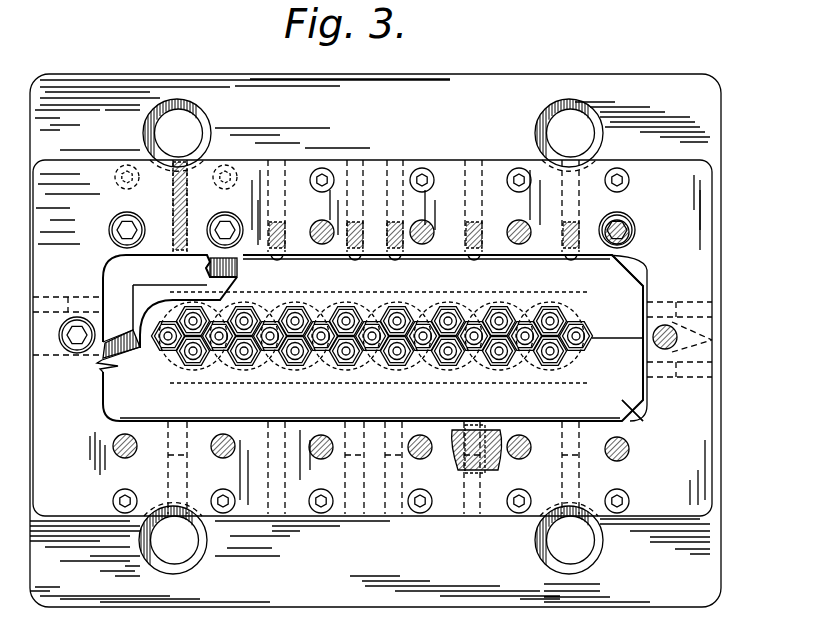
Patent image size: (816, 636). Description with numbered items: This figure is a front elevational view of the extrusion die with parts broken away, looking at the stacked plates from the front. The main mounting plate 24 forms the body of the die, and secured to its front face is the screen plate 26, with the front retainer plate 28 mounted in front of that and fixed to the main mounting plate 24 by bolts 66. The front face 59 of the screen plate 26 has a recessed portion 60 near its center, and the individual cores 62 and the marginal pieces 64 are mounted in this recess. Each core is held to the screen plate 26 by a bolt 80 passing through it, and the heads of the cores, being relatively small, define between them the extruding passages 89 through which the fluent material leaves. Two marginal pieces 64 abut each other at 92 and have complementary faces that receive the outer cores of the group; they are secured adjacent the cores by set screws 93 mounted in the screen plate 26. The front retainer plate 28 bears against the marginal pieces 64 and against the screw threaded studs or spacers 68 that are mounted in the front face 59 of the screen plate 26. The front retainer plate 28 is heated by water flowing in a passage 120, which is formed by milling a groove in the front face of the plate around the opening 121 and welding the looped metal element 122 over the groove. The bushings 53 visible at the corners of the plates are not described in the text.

The main mounting plate 24 is at (171, 621).
The screen plate 26 is at (704, 496).
The front retainer plate 28 is at (98, 170).
The guide bushings 53 is at (205, 135).
The front face 59 is at (704, 234).
The recessed portion 60 is at (644, 272).
The individual cores 62 is at (322, 305).
The marginal pieces 64 is at (641, 262).
The bolts 66 is at (110, 228).
The screw threaded studs or spacers 68 is at (328, 168).
The bolts 80 is at (400, 308).
The extruding passages 89 is at (488, 306).
The abutment of marginal pieces 92 is at (616, 345).
The set screws 93 is at (285, 235).
The passage 120 is at (222, 262).
The opening 121 is at (136, 318).
The looped metal element 122 is at (96, 280).